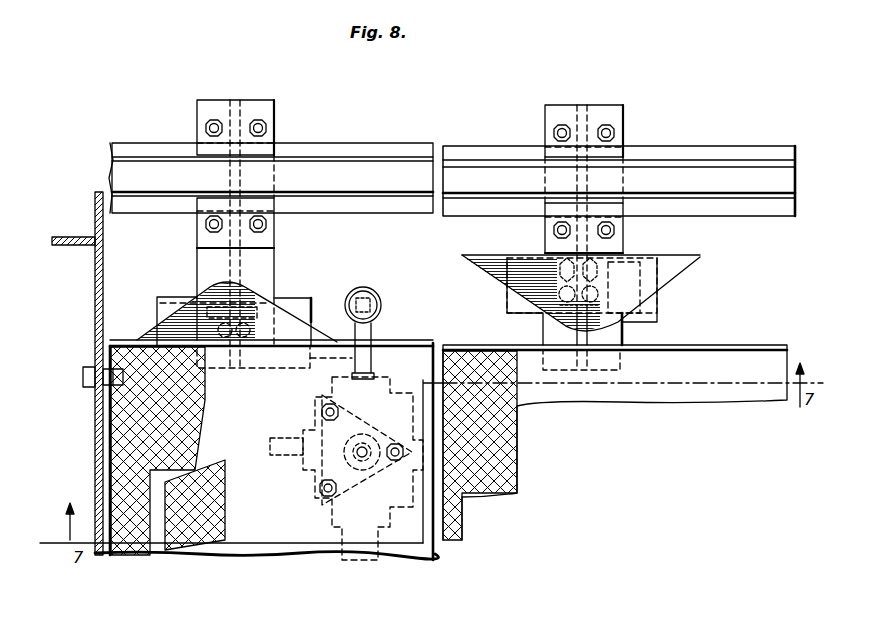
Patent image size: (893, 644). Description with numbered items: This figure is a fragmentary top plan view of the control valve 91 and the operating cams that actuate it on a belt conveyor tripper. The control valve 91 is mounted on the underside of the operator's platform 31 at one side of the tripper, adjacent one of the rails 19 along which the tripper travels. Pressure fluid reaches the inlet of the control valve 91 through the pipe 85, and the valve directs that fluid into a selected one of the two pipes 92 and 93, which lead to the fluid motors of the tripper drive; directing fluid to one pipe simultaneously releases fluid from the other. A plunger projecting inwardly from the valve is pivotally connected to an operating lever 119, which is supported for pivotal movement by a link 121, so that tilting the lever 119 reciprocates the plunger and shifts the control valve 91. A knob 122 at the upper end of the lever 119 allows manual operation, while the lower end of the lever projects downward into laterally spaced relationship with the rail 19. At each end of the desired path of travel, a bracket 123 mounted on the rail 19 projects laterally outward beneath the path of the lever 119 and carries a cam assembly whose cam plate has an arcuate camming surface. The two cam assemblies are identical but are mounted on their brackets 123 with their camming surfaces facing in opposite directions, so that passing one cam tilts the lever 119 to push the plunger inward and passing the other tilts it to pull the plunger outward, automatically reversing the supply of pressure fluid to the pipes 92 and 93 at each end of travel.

The rails 19 is at (393, 192).
The operator's platform 31 is at (497, 437).
The pipe 85 is at (282, 450).
The control valve 91 is at (320, 494).
The pipe 92 is at (458, 522).
The pipe 93 is at (428, 405).
The operating lever 119 is at (369, 292).
The link 121 is at (375, 330).
The knob 122 is at (382, 303).
The bracket 123 is at (262, 112).